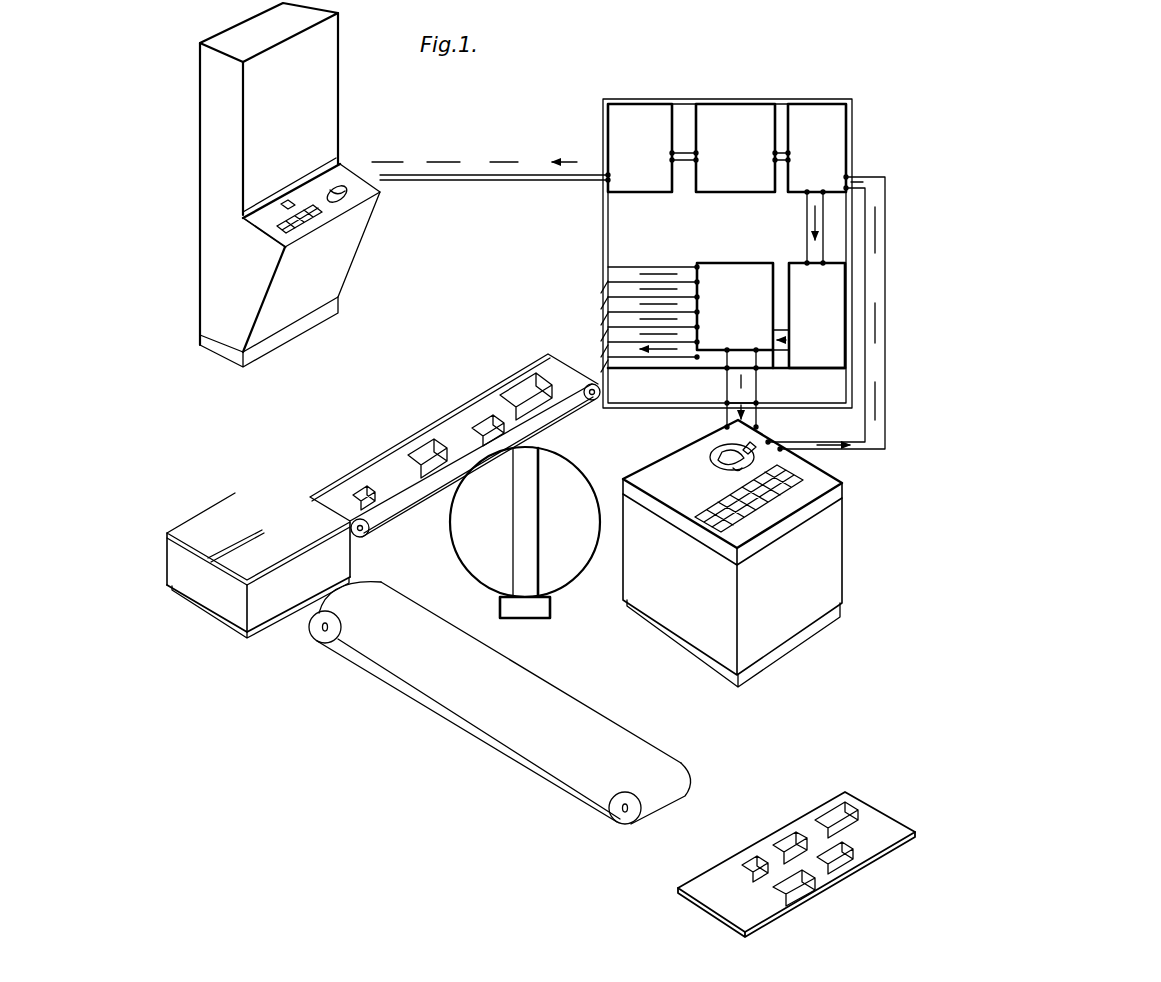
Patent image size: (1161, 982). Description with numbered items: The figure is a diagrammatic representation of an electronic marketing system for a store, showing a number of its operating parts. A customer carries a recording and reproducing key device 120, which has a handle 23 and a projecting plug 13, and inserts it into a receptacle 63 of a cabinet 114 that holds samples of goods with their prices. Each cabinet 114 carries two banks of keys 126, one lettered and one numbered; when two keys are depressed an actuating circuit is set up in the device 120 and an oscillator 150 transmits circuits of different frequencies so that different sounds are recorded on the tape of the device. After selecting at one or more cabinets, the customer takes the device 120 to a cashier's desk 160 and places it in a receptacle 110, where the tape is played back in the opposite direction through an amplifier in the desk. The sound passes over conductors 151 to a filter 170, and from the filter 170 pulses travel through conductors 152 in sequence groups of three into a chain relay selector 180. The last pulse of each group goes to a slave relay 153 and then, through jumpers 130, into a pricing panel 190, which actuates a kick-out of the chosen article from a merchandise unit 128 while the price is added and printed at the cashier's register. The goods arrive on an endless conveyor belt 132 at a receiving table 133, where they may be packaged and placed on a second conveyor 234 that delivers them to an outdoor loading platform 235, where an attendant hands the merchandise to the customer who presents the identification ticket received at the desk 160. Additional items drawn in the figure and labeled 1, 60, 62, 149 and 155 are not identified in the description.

The mail item 1 is at (457, 553).
The projecting plug 13 is at (535, 613).
The handle 23 is at (533, 495).
The keyboard 60 is at (293, 203).
The key 62 is at (282, 210).
The receptacle 63 is at (333, 203).
The receptacle 110 is at (710, 451).
The cabinet 114 is at (215, 137).
The recording and reproducing key device 120 is at (575, 600).
The banks of keys 126 is at (292, 240).
The merchandise unit 128 is at (608, 318).
The jumpers 130 is at (747, 358).
The endless conveyor belt 132 is at (445, 430).
The receiving table 133 is at (238, 513).
The memory 149 is at (725, 122).
The oscillator 150 is at (625, 120).
The conductors 151 is at (868, 360).
The conductors 152 is at (820, 215).
The slave relay 153 is at (723, 262).
The connection line 155 is at (758, 424).
The cashier's desk 160 is at (732, 553).
The filter 170 is at (838, 142).
The chain relay selector 180 is at (837, 303).
The pricing panel 190 is at (725, 393).
The second conveyor 234 is at (397, 627).
The loading platform 235 is at (762, 911).